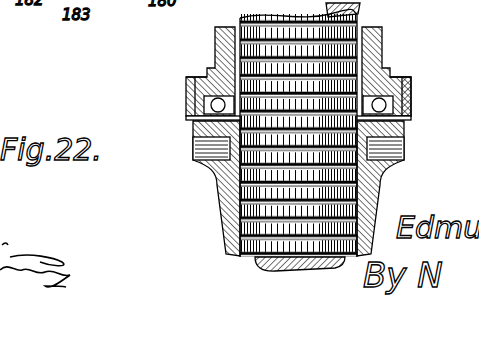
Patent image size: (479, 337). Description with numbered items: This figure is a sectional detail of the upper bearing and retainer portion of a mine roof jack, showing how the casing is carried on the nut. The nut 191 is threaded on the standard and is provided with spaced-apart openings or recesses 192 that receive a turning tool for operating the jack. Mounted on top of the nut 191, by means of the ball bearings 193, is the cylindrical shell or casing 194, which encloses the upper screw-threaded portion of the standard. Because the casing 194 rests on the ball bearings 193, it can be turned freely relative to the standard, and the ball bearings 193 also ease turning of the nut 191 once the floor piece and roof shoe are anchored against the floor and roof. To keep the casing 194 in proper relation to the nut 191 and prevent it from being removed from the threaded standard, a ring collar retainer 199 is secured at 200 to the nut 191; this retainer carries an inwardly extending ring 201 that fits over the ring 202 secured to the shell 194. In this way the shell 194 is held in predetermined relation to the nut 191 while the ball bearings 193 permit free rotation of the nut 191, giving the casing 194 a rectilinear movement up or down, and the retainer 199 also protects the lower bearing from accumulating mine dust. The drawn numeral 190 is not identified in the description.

The helical coil 190 is at (300, 137).
The nut 191 is at (390, 187).
The openings or recesses 192 is at (407, 146).
The ball bearings 193 is at (398, 70).
The cylindrical shell or casing 194 is at (379, 34).
The ring collar retainer 199 is at (189, 88).
The securing point of retainer 200 is at (190, 124).
The inwardly extending ring 201 is at (194, 76).
The ring 202 is at (381, 86).